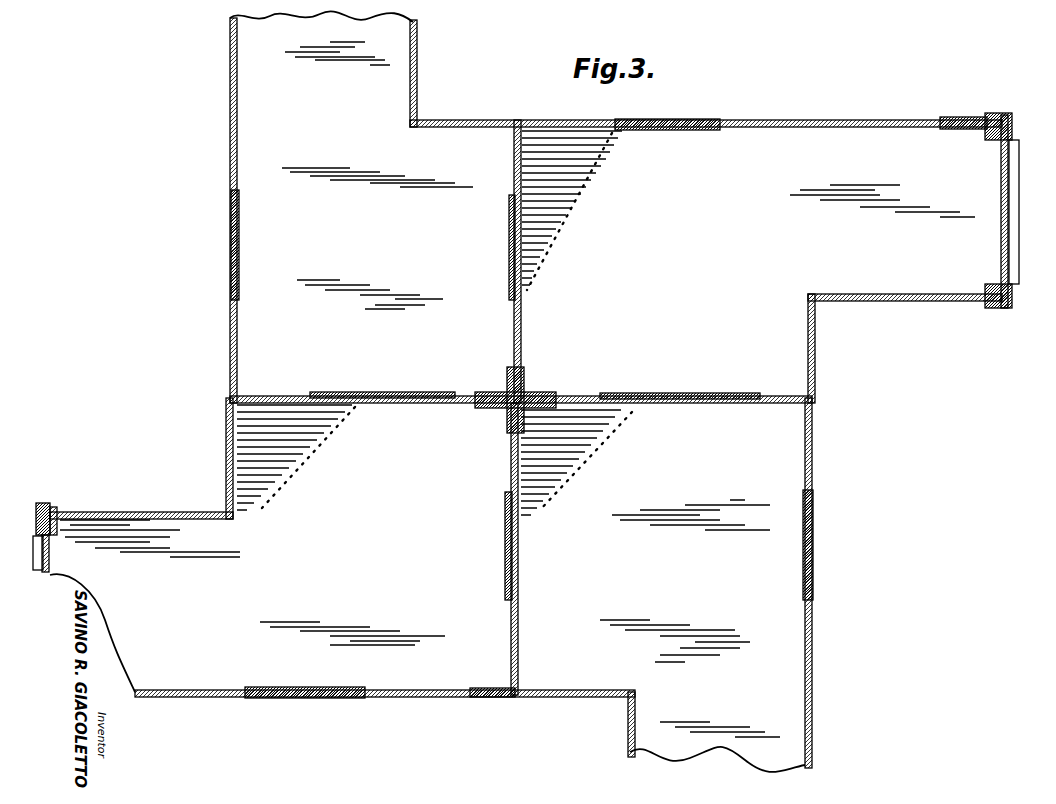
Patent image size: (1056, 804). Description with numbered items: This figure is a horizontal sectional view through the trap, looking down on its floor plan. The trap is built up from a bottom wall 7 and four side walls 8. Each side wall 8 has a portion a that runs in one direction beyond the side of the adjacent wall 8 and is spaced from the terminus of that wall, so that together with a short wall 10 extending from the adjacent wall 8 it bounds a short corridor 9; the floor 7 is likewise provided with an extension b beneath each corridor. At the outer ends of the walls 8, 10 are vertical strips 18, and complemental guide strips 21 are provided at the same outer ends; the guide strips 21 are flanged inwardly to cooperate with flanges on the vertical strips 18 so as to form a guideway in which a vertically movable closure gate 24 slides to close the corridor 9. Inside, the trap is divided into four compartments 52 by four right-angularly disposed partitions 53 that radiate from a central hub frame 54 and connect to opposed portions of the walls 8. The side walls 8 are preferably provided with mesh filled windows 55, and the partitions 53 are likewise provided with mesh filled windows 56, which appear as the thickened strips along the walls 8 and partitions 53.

The bottom wall 7 is at (783, 466).
The side wall 8 is at (746, 124).
The short corridor 9 is at (517, 389).
The short wall 10 is at (882, 300).
The vertical strip 18 is at (968, 117).
The guide strip 21 is at (1006, 114).
The closure gate 24 is at (1012, 234).
The compartment 52 is at (477, 348).
The partition 53 is at (455, 396).
The hub frame 54 is at (524, 378).
The mesh filled window 55 is at (672, 121).
The mesh filled window 56 is at (522, 291).
The portion a is at (918, 120).
The extension b is at (926, 278).